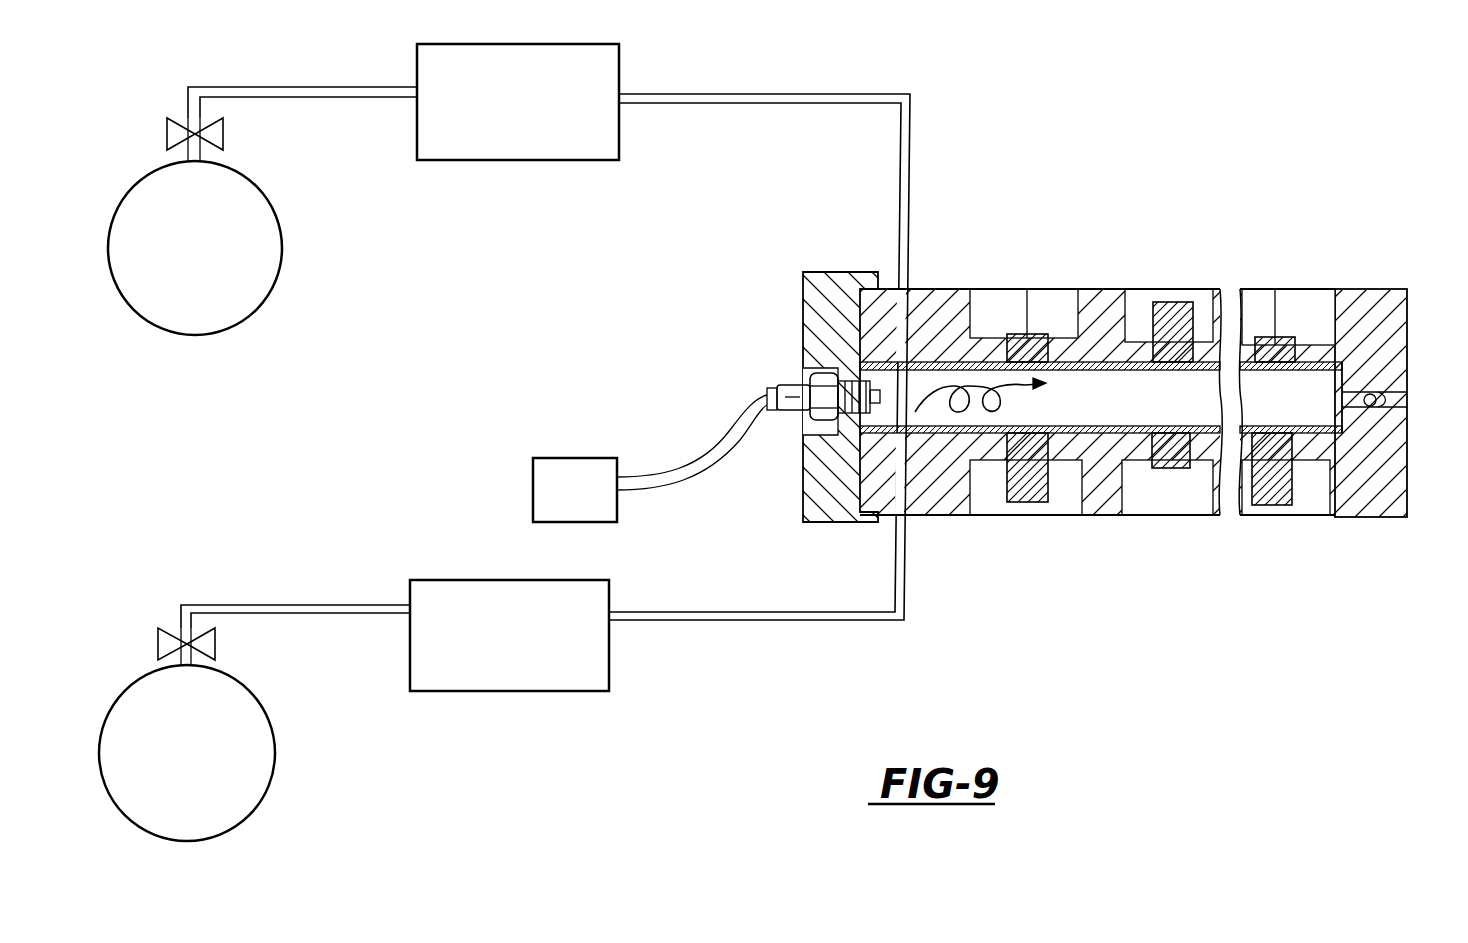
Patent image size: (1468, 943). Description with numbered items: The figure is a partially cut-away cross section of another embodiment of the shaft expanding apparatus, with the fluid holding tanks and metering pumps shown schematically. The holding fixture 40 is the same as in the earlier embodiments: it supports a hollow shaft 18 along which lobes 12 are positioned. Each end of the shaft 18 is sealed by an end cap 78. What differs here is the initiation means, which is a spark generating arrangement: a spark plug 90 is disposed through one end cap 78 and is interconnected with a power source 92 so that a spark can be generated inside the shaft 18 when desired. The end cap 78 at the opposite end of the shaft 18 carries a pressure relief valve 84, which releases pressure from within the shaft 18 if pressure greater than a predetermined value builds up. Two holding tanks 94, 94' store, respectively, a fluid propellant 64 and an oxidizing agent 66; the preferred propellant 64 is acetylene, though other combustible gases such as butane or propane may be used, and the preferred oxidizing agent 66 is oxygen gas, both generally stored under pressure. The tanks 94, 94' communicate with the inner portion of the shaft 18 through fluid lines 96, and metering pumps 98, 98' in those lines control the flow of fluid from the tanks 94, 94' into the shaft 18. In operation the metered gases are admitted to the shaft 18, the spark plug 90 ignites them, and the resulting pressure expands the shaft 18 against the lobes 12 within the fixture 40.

The lobes 12 is at (1177, 300).
The shaft 18 is at (1103, 436).
The holding fixture 40 is at (1103, 289).
The propellant 64 is at (253, 276).
The oxidizing agent 66 is at (260, 783).
The end cap 78 is at (833, 285).
The pressure relief valve 84 is at (1390, 398).
The spark plug 90 is at (812, 430).
The power source 92 is at (573, 460).
The holding tank 94 is at (263, 187).
The holding tank 94' is at (269, 680).
The fluid lines 96 is at (912, 213).
The metering pump 98 is at (556, 115).
The metering pump 98' is at (553, 658).